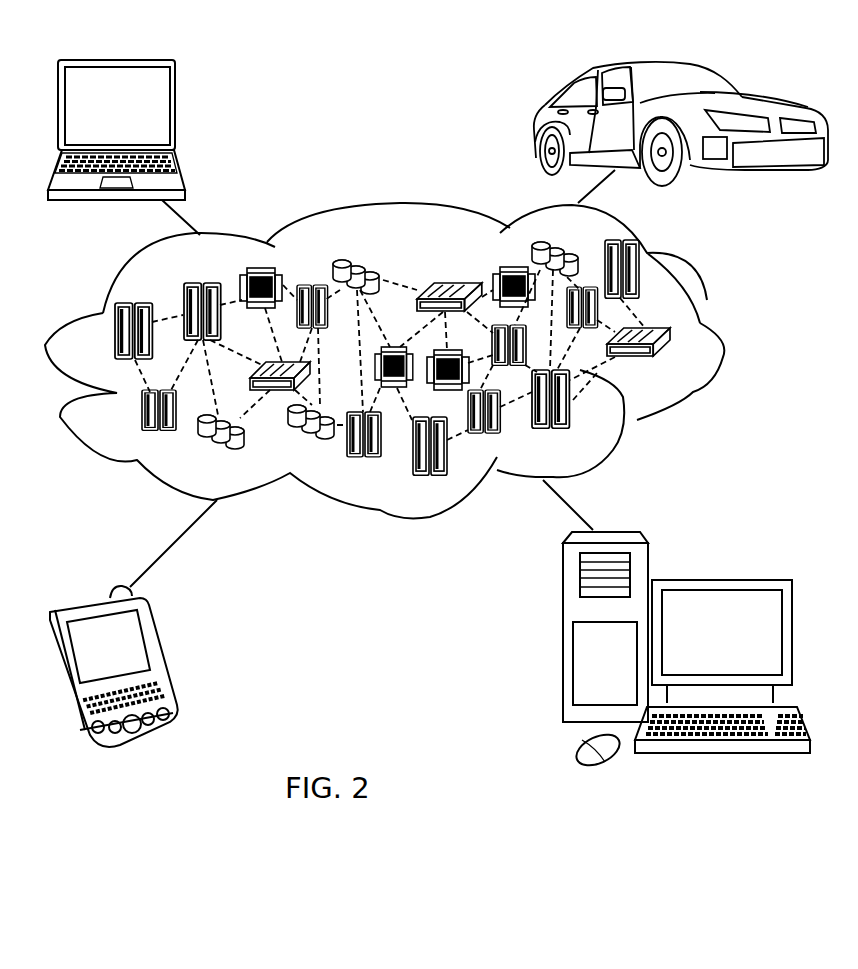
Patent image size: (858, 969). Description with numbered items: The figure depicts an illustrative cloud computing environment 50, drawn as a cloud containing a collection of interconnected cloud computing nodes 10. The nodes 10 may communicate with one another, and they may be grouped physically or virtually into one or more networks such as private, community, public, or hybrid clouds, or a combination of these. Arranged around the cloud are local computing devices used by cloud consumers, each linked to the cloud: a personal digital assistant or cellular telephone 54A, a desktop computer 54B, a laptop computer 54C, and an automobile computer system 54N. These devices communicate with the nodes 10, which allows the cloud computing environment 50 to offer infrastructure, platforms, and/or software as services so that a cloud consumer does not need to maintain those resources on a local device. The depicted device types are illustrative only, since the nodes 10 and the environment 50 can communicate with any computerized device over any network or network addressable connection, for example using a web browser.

The cloud computing nodes 10 is at (676, 367).
The cloud computing environment 50 is at (723, 343).
The personal digital assistant or cellular telephone 54A is at (163, 657).
The desktop computer 54B is at (720, 580).
The laptop computer 54C is at (175, 112).
The automobile computer system 54N is at (538, 123).